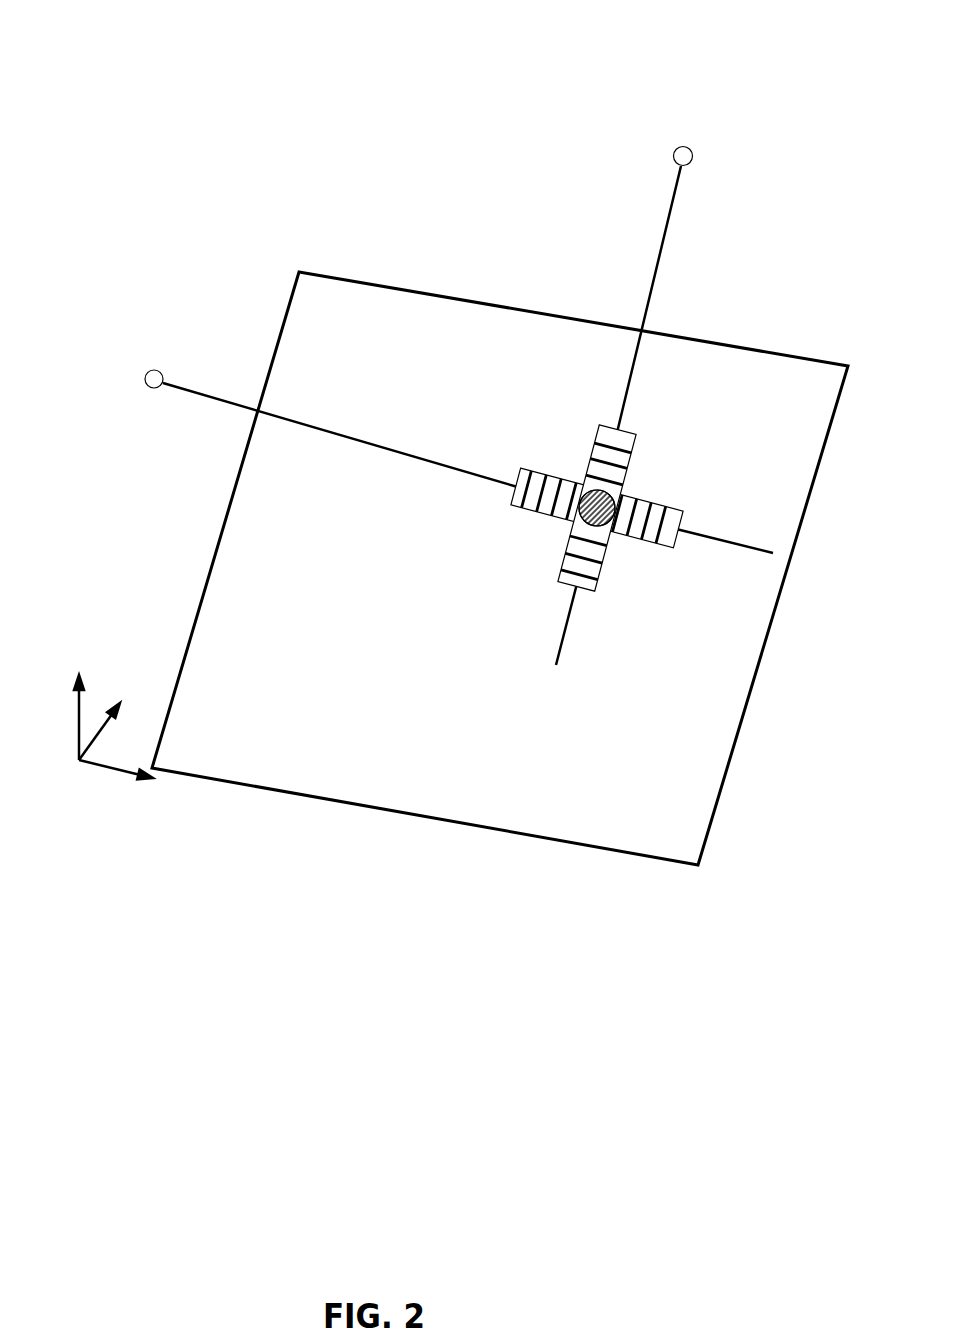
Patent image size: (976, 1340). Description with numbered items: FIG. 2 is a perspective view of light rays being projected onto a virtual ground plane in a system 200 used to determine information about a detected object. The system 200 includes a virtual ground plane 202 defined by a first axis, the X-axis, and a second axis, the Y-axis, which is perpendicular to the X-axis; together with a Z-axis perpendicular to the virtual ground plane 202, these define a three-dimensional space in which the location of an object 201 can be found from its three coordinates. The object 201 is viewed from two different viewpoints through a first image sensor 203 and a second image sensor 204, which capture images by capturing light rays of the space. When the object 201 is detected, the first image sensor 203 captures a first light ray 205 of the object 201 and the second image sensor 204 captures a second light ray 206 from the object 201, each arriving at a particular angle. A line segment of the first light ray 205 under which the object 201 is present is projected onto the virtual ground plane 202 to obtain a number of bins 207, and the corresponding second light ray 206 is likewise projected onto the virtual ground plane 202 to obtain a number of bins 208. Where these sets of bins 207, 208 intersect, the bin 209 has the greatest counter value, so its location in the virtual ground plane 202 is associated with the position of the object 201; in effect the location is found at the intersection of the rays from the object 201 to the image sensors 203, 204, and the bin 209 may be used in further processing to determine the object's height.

The system 200 is at (120, 52).
The object 201 is at (612, 517).
The virtual ground plane 202 is at (203, 590).
The first image sensor 203 is at (146, 378).
The second image sensor 204 is at (693, 151).
The first light ray 205 is at (232, 403).
The second light ray 206 is at (660, 255).
The bins 207 is at (540, 514).
The bins 208 is at (600, 573).
The bin 209 is at (587, 507).